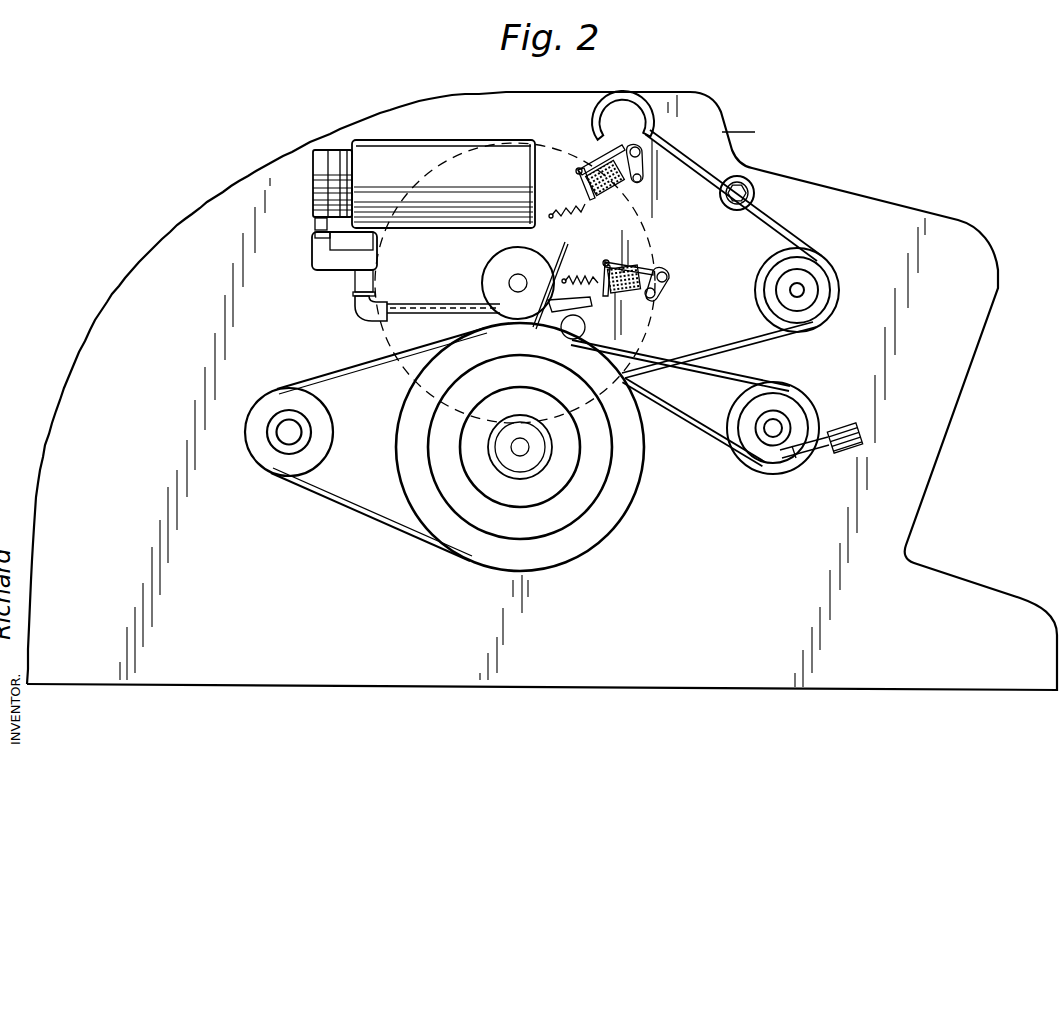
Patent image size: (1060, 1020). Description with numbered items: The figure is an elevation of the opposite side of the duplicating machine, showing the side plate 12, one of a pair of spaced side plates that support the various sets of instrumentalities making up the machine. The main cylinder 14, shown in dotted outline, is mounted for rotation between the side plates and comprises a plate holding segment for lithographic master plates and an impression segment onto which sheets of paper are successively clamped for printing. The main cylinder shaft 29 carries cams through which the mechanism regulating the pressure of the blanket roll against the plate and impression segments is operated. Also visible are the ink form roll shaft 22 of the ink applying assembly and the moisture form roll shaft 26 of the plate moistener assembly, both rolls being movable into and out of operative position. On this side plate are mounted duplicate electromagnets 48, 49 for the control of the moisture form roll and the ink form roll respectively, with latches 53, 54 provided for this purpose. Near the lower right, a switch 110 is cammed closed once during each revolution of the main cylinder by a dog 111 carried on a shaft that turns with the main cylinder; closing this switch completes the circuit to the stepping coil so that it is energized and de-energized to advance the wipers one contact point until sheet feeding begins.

The side plate 12 is at (722, 132).
The main cylinder 14 is at (388, 338).
The ink form roll shaft 22 is at (672, 273).
The moisture form roll shaft 26 is at (642, 165).
The main cylinder shaft 29 is at (513, 282).
The electromagnet 48 is at (607, 194).
The electromagnet 49 is at (620, 293).
The latch 53 is at (583, 168).
The latch 54 is at (605, 262).
The switch 110 is at (826, 447).
The dog 111 is at (792, 417).